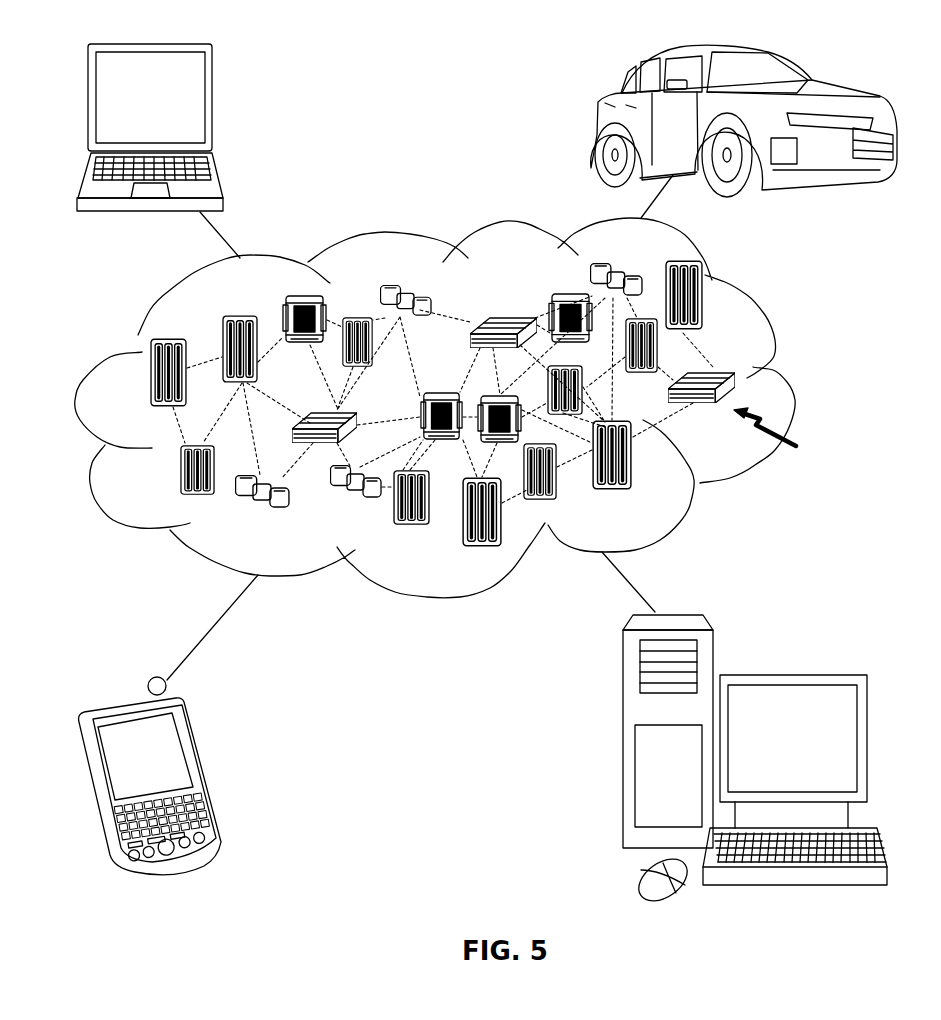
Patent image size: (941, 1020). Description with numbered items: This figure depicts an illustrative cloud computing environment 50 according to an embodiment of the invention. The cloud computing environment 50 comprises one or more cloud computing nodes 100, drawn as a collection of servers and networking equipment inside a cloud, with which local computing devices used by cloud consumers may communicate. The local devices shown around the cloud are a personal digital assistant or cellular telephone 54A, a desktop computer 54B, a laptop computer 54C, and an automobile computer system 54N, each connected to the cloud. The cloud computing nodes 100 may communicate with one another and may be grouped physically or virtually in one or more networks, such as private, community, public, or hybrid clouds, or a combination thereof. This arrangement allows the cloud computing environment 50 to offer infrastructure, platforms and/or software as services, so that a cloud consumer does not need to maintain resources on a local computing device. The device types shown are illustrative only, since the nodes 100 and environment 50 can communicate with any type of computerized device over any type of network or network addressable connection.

The cloud computing environment 50 is at (790, 384).
The cloud computing nodes 100 is at (790, 434).
The personal digital assistant (PDA) or cellular telephone 54A is at (202, 770).
The desktop computer 54B is at (790, 673).
The laptop computer 54C is at (210, 108).
The automobile computer system 54N is at (599, 122).